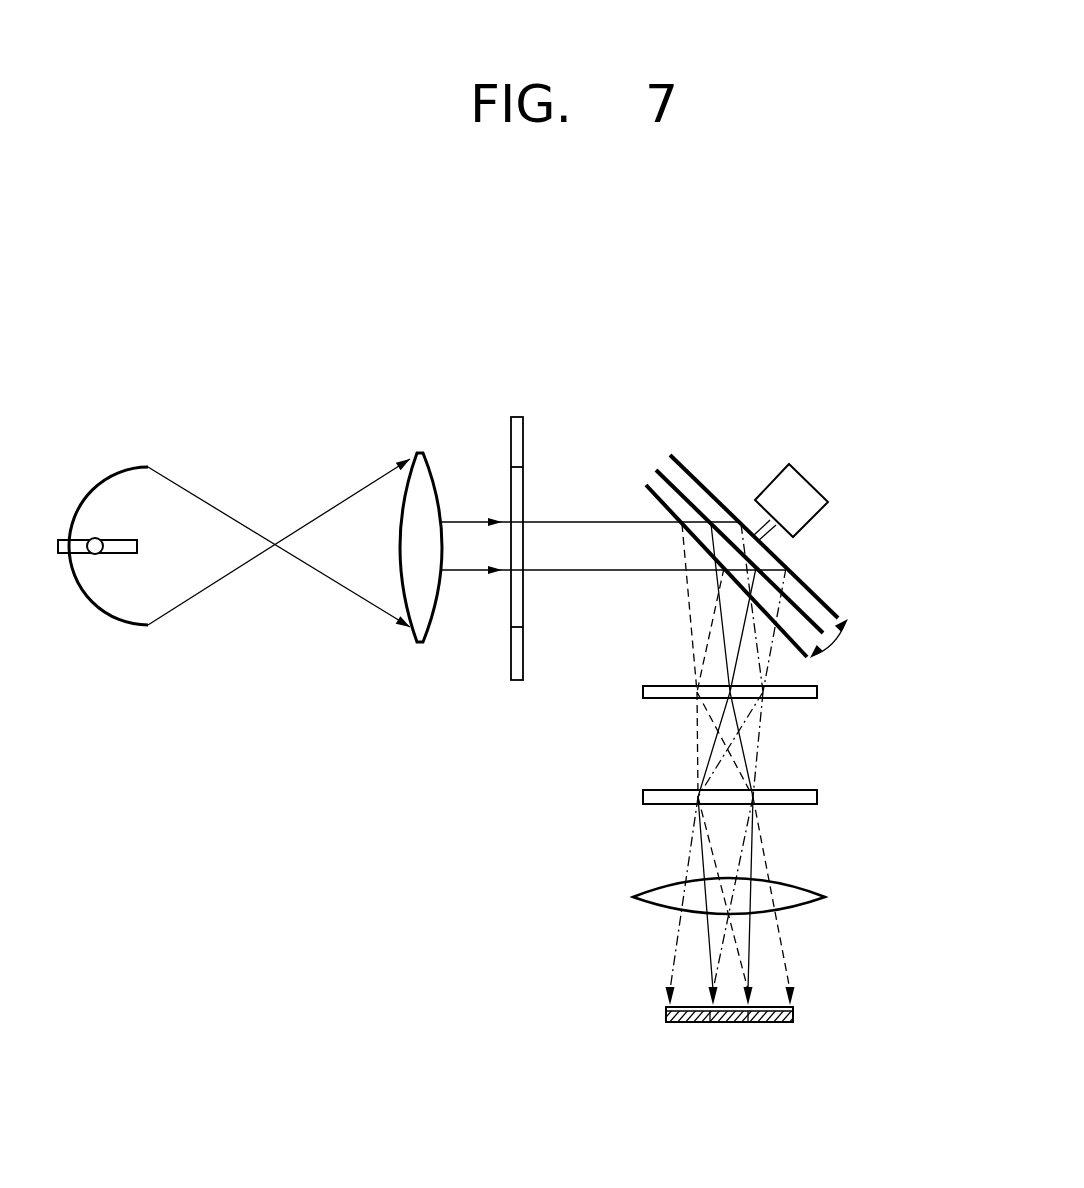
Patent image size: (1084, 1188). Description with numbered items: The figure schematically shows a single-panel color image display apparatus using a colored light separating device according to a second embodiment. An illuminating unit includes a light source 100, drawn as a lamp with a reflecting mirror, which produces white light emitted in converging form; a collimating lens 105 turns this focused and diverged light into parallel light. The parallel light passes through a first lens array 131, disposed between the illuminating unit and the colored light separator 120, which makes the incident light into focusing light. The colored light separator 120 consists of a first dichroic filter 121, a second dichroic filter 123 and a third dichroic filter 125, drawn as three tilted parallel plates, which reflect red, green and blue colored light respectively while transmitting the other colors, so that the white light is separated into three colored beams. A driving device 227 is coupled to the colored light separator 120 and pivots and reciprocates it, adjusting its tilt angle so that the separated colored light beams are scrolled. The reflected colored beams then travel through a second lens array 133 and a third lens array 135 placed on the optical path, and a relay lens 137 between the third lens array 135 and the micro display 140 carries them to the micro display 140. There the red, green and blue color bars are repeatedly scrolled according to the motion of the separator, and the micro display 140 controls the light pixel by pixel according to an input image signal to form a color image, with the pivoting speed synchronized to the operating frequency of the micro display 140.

The light source 100 is at (158, 442).
The collimating lens 105 is at (420, 453).
The first lens array 131 is at (518, 417).
The colored light separator 120 is at (732, 514).
The first dichroic filter 121 is at (645, 486).
The second dichroic filter 123 is at (666, 474).
The third dichroic filter 125 is at (700, 478).
The driving device 227 is at (810, 482).
The second lens array 133 is at (817, 692).
The third lens array 135 is at (817, 797).
The relay lens 137 is at (825, 897).
The micro display 140 is at (812, 1010).